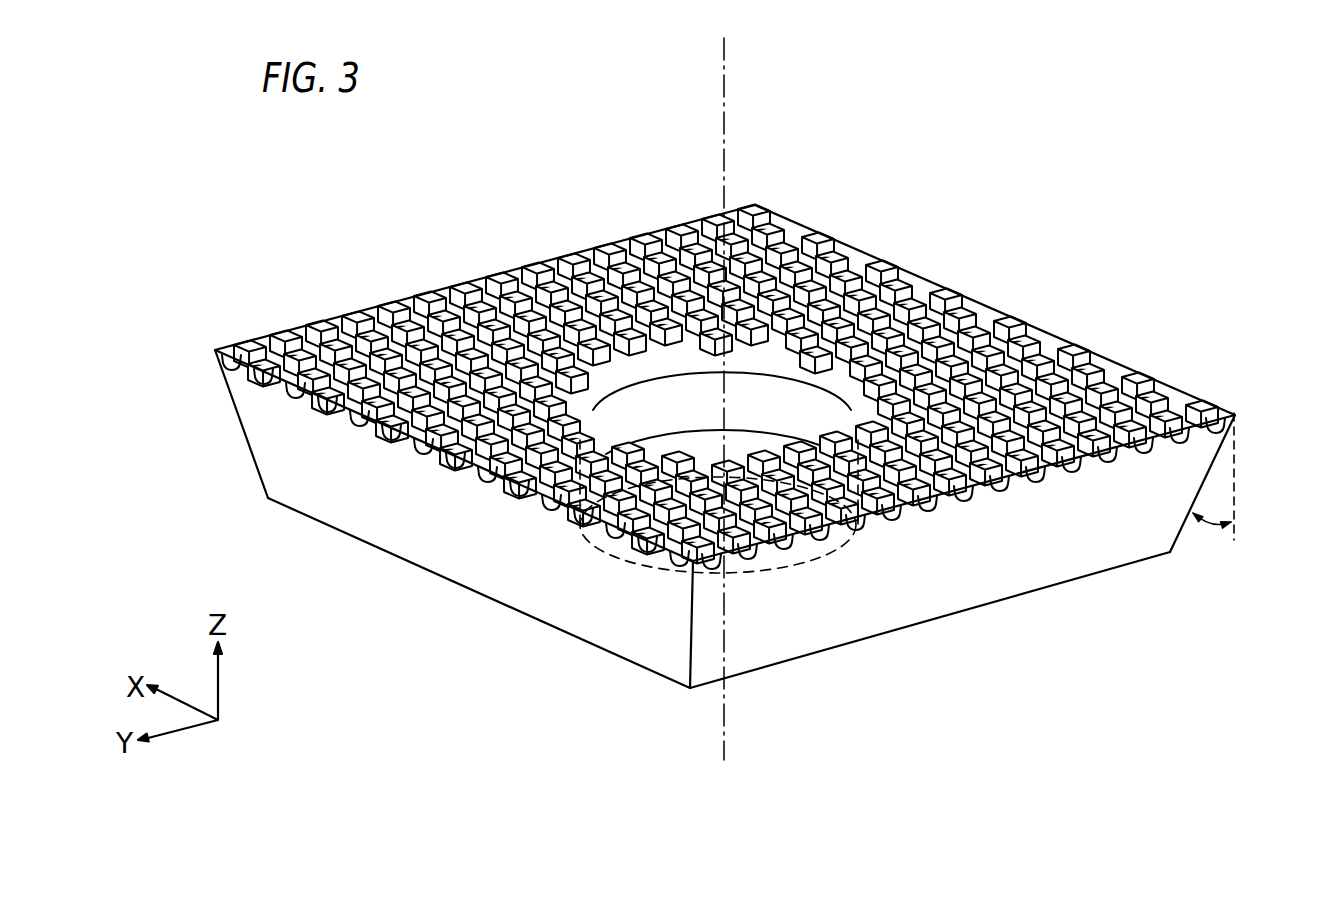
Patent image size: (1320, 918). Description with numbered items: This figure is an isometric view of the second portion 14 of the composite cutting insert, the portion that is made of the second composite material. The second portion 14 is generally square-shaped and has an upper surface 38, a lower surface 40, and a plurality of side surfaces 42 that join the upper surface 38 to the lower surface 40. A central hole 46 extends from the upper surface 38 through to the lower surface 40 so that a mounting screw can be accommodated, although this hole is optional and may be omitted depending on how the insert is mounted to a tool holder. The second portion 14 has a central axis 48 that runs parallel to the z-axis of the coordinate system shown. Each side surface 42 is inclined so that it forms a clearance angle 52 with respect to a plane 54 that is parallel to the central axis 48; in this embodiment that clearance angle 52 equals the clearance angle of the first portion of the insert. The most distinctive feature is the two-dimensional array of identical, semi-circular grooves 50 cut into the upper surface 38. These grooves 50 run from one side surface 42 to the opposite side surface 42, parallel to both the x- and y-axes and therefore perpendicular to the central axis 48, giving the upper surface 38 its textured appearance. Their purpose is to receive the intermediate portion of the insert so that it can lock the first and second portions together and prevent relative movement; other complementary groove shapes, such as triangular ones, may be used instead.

The second portion 14 is at (1066, 298).
The upper surface 38 is at (916, 288).
The lower surface 40 is at (942, 624).
The side surfaces 42 is at (500, 556).
The central hole 46 is at (798, 372).
The central axis 48 is at (726, 90).
The semi-circular grooves 50 is at (604, 533).
The clearance angle 52 is at (1208, 522).
The plane 54 is at (1238, 452).